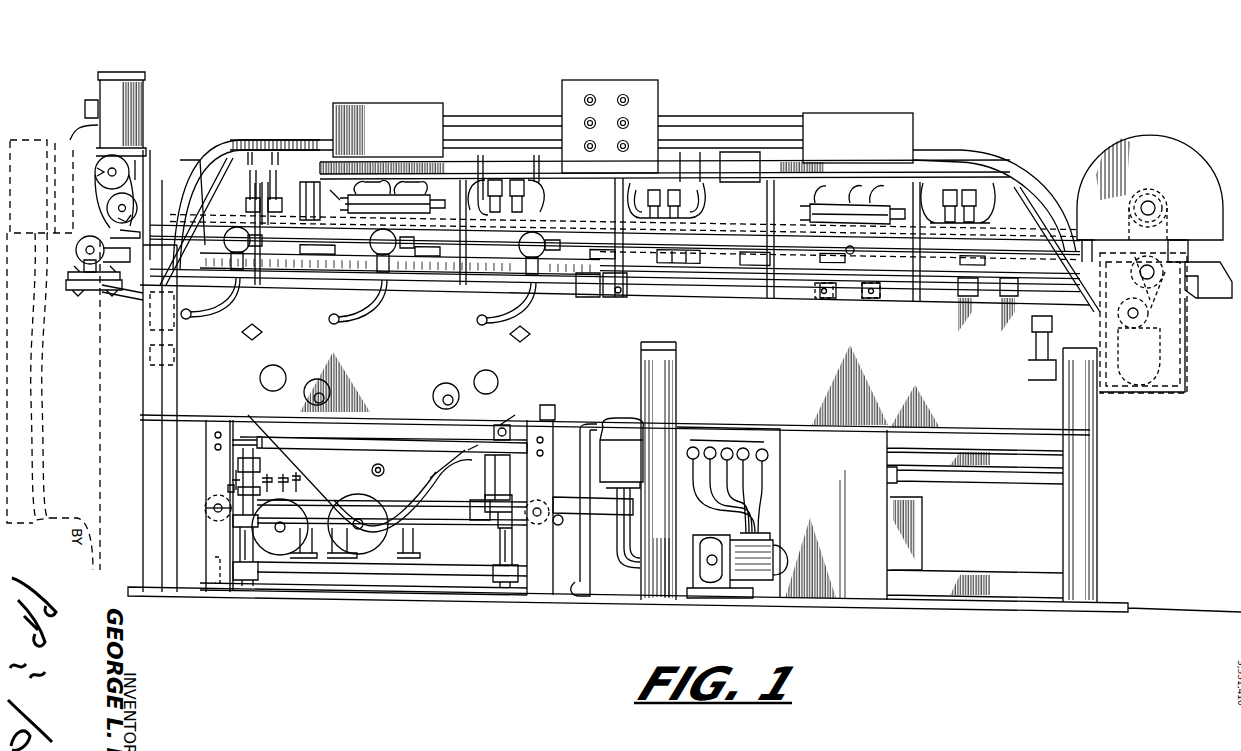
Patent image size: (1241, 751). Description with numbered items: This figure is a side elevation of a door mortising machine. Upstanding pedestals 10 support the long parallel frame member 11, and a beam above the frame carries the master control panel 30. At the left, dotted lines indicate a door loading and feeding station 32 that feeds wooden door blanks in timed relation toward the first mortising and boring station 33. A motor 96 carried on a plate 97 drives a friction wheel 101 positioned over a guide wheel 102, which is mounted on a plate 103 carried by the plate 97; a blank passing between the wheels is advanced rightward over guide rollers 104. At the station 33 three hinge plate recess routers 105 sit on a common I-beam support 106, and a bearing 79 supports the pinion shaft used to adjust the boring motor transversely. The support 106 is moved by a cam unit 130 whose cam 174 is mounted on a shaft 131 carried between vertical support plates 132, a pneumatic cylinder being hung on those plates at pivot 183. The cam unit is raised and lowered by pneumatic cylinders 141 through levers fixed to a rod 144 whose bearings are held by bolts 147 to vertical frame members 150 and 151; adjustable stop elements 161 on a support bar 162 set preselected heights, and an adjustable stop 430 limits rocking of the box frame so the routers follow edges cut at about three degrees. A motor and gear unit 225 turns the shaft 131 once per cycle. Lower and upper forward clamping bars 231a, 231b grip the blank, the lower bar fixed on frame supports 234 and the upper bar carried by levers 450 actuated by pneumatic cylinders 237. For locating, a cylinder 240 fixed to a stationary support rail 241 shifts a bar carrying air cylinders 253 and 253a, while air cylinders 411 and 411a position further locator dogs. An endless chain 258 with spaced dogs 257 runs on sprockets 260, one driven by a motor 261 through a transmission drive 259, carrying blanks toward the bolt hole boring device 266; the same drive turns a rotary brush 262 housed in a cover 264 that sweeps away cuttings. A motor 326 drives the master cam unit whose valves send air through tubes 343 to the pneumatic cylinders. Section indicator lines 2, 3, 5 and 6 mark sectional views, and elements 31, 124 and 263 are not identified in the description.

The section line 2 is at (1060, 78).
The section line 3 is at (412, 100).
The section line 5 is at (740, 200).
The section line 6 is at (180, 60).
The upstanding pedestals 10 is at (160, 382).
The frame member 11 is at (880, 440).
The master control panel 30 is at (635, 80).
The housing 31 is at (388, 103).
The door loading and feeding station 32 is at (40, 125).
The first mortising and boring station 33 is at (318, 88).
The bearing 79 is at (268, 182).
The motor 96 is at (145, 100).
The plate 97 is at (145, 158).
The friction wheel 101 is at (105, 200).
The guide wheel 102 is at (128, 292).
The plate 103 is at (94, 298).
The guide rollers 104 is at (705, 268).
The hinge plate recess routers 105 is at (265, 278).
The I-beam support 106 is at (322, 306).
The fitting block 124 is at (476, 278).
The cam unit 130 is at (422, 510).
The shaft 131 is at (372, 470).
The vertical support plates 132 is at (410, 420).
The pneumatic cylinders 141 is at (238, 584).
The rod 144 is at (282, 420).
The bolts 147 is at (205, 510).
The vertical frame member 150 is at (214, 422).
The vertical frame member 151 is at (542, 424).
The adjustable stop elements 161 is at (462, 476).
The support bar 162 is at (488, 500).
The cam 174 is at (396, 506).
The pivot 183 is at (496, 436).
The motor and gear unit 225 is at (370, 592).
The lower forward clamping bar 231a is at (1016, 294).
The upper forward clamping bar 231b is at (970, 290).
The frame supports 234 is at (312, 178).
The pneumatic cylinders 237 is at (170, 325).
The cylinder 240 is at (380, 196).
The stationary support rail 241 is at (166, 215).
The air cylinder 253 is at (495, 180).
The air cylinder 253a is at (518, 182).
The dogs 257 is at (636, 290).
The endless chain 258 is at (1090, 248).
The transmission drive 259 is at (1185, 312).
The sprockets 260 is at (110, 248).
The motor 261 is at (1130, 395).
The rotary brush 262 is at (1185, 248).
The housing 263 is at (1162, 400).
The cover 264 is at (1170, 134).
The bolt hole boring device 266 is at (865, 290).
The motor 326 is at (760, 548).
The air tubes 343 is at (760, 478).
The air cylinder 411 is at (237, 192).
The air cylinder 411a is at (277, 175).
The adjustable stop 430 is at (262, 340).
The levers 450 is at (140, 240).